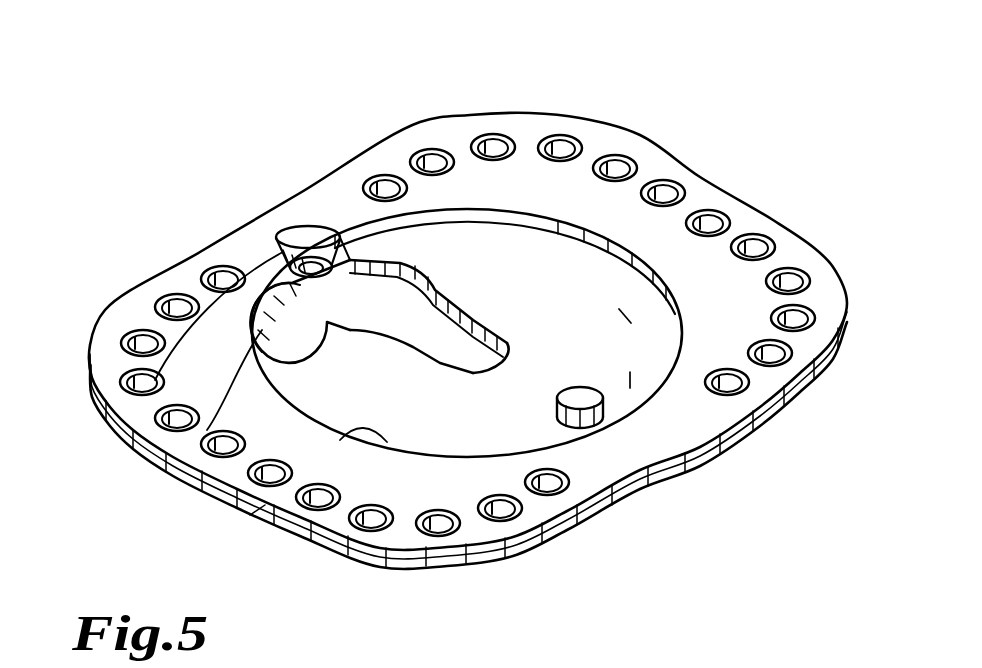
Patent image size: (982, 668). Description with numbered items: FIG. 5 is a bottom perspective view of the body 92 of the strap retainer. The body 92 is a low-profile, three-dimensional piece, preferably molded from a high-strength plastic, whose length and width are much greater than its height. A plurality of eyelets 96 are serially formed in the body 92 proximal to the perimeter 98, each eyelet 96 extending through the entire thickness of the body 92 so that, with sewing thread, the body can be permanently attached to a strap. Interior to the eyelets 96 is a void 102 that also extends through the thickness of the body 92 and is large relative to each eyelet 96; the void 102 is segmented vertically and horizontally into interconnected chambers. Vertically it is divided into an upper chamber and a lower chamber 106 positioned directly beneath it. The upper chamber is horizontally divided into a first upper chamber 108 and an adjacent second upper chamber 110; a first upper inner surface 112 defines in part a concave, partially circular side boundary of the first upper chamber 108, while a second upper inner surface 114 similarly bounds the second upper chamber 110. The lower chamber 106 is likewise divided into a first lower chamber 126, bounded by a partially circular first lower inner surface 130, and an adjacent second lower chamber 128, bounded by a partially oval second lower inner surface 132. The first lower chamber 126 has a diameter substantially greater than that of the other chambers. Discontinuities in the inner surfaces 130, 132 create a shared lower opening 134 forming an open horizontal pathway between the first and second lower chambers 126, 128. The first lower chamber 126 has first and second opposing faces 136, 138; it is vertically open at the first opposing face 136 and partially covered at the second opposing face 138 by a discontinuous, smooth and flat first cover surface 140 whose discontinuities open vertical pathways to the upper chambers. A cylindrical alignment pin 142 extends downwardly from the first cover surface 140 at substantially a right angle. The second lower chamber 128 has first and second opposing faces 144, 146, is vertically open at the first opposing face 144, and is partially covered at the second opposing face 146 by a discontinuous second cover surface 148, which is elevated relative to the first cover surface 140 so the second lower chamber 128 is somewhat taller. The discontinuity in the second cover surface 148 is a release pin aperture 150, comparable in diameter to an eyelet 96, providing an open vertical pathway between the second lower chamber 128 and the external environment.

The body 92 is at (673, 157).
The eyelets 96 is at (507, 138).
The perimeter 98 is at (488, 118).
The void 102 is at (625, 316).
The lower chamber 106 is at (583, 286).
The first upper chamber 108 is at (398, 310).
The second upper chamber 110 is at (458, 362).
The first upper inner surface 112 is at (405, 265).
The second upper inner surface 114 is at (472, 325).
The first lower chamber 126 is at (633, 380).
The second lower chamber 128 is at (314, 231).
The first lower inner surface 130 is at (548, 213).
The second lower inner surface 132 is at (298, 262).
The shared lower opening 134 is at (207, 430).
The first opposing face 136 is at (340, 430).
The second opposing face 138 is at (265, 513).
The first cover surface 140 is at (512, 438).
The alignment pin 142 is at (648, 444).
The first opposing face 144 is at (155, 380).
The second opposing face 146 is at (320, 228).
The second cover surface 148 is at (349, 258).
The release pin aperture 150 is at (300, 250).